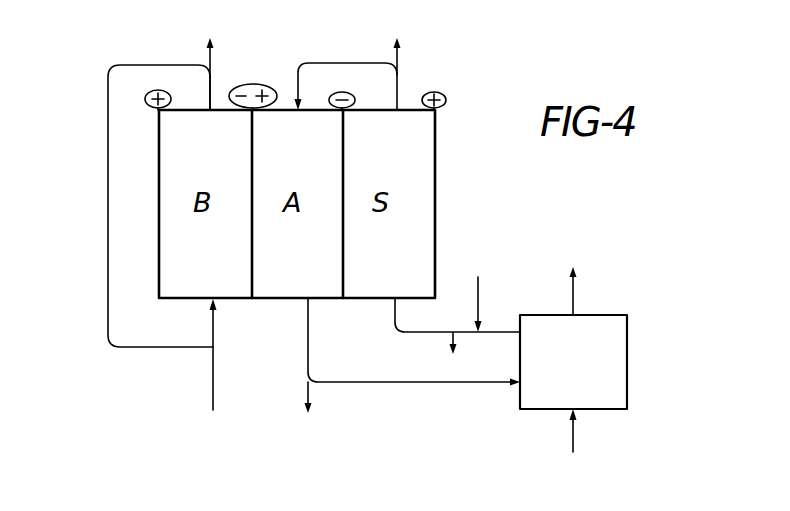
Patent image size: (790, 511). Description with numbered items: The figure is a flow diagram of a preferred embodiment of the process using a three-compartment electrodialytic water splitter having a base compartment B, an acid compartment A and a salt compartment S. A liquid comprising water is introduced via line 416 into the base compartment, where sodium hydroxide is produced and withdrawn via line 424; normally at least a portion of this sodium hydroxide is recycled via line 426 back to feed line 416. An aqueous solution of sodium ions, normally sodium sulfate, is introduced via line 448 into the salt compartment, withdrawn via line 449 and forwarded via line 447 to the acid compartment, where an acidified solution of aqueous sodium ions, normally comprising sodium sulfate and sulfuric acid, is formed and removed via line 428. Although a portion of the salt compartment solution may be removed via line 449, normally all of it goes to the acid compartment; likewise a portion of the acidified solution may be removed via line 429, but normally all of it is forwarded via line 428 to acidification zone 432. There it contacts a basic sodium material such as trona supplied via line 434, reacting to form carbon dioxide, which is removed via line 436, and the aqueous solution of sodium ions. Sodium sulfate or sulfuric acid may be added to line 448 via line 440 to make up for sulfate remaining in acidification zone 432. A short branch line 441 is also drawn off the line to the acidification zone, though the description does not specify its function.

The feed line 416 is at (213, 393).
The sodium hydroxide withdrawal line 424 is at (210, 50).
The recycle line 426 is at (108, 128).
The acid compartment outlet line 428 is at (308, 344).
The removal line 429 is at (308, 400).
The acidification zone 432 is at (627, 370).
The sodium material supply line 434 is at (576, 436).
The carbon dioxide removal line 436 is at (574, 296).
The make-up line 440 is at (481, 308).
The bleed outlet line 441 is at (466, 340).
The salt-to-acid transfer line 447 is at (358, 32).
The salt compartment feed line 448 is at (396, 318).
The salt compartment withdrawal line 449 is at (397, 67).